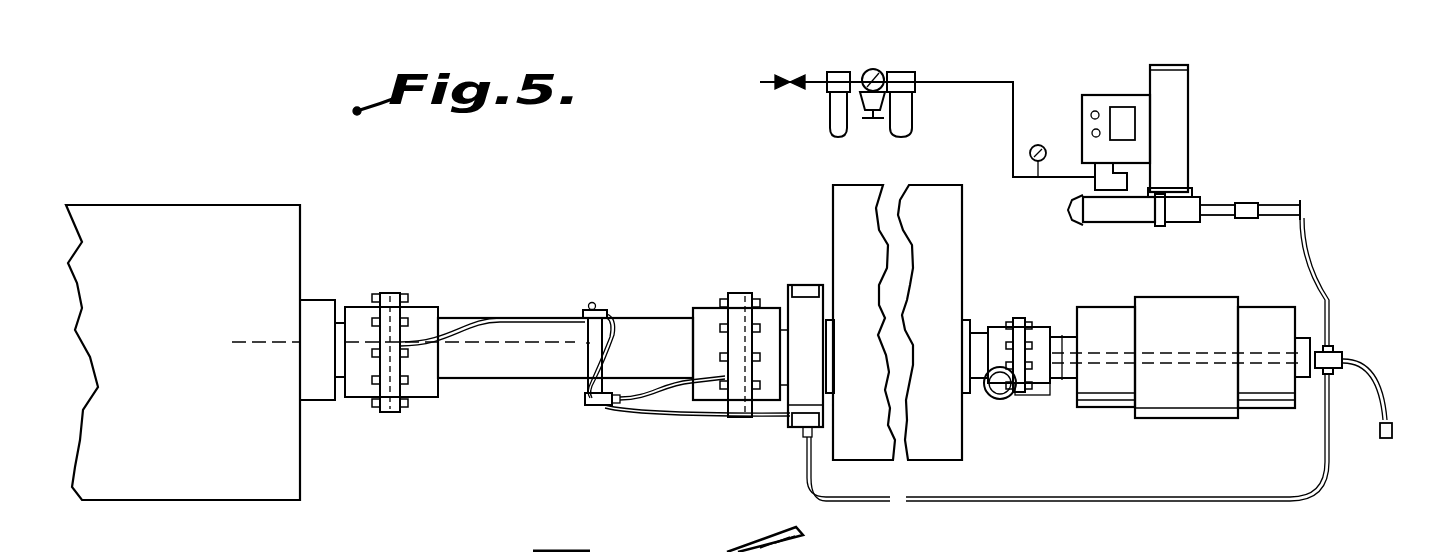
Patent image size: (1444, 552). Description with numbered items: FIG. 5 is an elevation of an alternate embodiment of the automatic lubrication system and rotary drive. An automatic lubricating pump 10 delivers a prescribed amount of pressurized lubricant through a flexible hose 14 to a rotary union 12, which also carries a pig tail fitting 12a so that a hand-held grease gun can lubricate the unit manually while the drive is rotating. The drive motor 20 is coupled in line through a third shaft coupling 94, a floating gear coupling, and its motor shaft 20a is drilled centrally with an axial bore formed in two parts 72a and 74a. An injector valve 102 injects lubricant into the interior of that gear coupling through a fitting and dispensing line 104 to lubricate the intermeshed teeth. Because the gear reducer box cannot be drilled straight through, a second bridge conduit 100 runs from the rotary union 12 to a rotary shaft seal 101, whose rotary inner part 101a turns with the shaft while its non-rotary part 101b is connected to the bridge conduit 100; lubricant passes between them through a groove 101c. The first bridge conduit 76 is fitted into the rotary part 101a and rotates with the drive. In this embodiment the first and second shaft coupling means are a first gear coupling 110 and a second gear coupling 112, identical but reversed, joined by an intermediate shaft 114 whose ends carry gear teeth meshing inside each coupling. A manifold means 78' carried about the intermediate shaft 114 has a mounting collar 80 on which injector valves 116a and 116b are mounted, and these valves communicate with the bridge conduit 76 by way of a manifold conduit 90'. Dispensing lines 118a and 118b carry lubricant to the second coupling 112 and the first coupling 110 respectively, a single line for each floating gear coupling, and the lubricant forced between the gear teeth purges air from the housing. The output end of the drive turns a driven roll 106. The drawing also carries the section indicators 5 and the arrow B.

The driven roll 106 is at (205, 266).
The section line 5 is at (258, 344).
The second gear coupling 112 is at (384, 295).
The intermediate shaft 114 is at (648, 318).
The flow direction B is at (670, 290).
The dispensing line 118a is at (498, 318).
The manifold means 78' is at (554, 275).
The injector valve 116a is at (598, 310).
The manifold conduit 90' is at (628, 356).
The mounting collar 80 is at (586, 344).
The injector valve 116b is at (588, 405).
The dispensing line 118b is at (650, 405).
The bridge conduit 76 is at (690, 418).
The first gear coupling 110 is at (728, 302).
The rotary shaft seal 101 is at (792, 288).
The rotary inner part 101a is at (812, 284).
The groove 101c is at (800, 428).
The non-rotary part 101b is at (818, 402).
The second bridge conduit 100 is at (940, 513).
The dispensing line 104 is at (988, 392).
The third shaft coupling 94 is at (1013, 318).
The injector valve 102 is at (1015, 405).
The drive motor 20 is at (1200, 341).
The motor shaft 20a is at (1062, 335).
The axial bore 72a is at (1102, 350).
The axial bore 74a is at (1080, 372).
The rotary union 12 is at (1334, 350).
The pig tail fitting 12a is at (1393, 410).
The flexible hose 14 is at (1320, 262).
The automatic lubricating pump 10 is at (1205, 57).